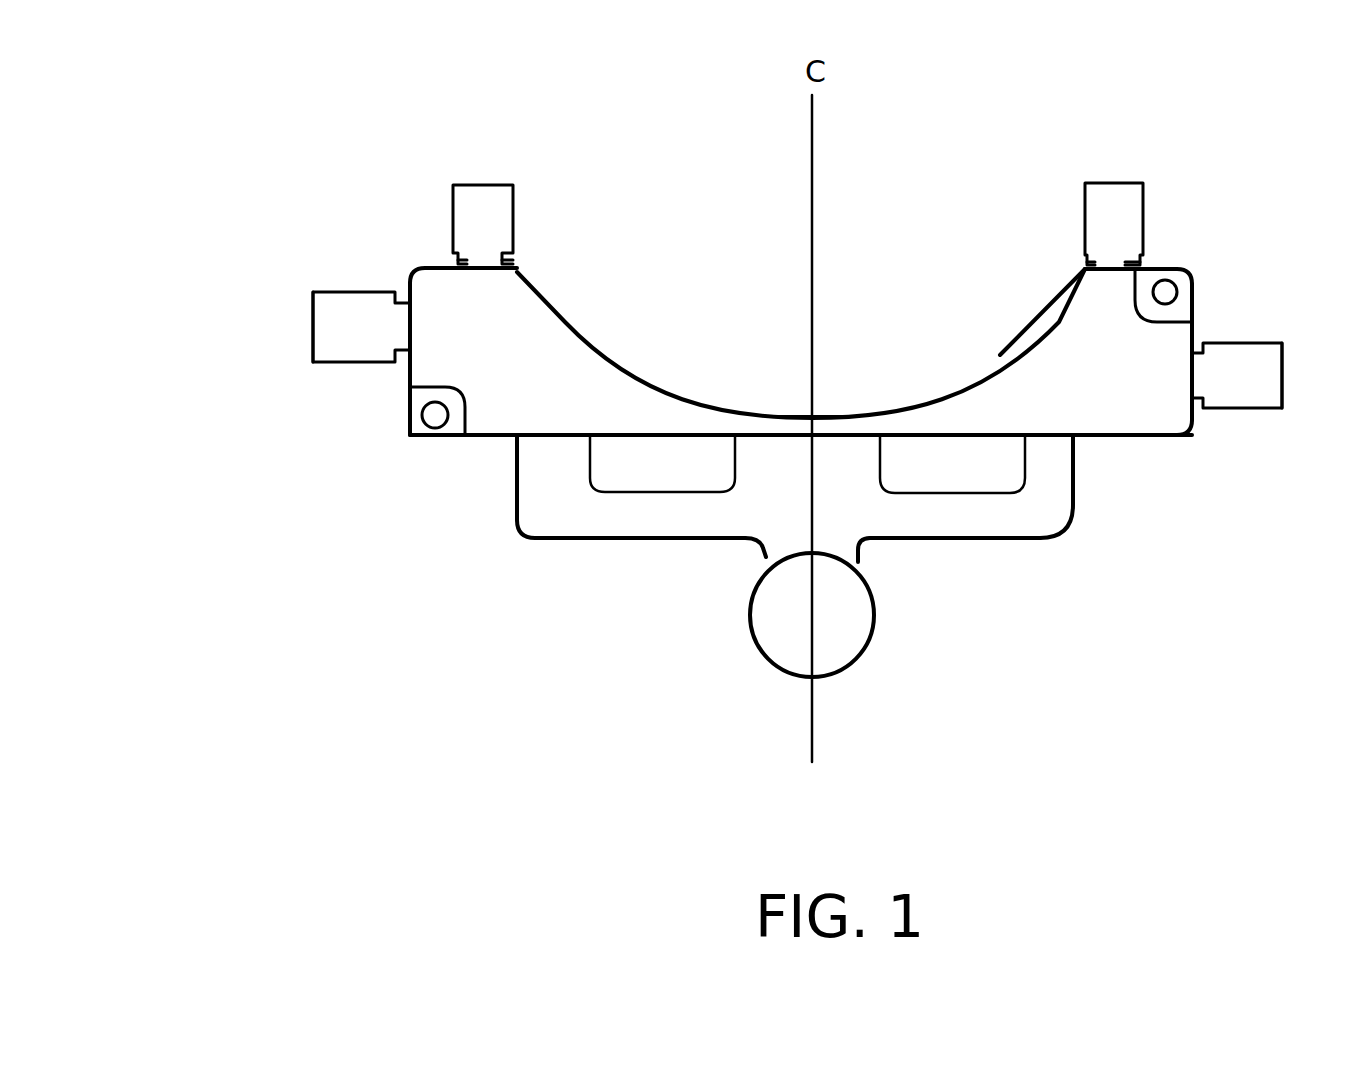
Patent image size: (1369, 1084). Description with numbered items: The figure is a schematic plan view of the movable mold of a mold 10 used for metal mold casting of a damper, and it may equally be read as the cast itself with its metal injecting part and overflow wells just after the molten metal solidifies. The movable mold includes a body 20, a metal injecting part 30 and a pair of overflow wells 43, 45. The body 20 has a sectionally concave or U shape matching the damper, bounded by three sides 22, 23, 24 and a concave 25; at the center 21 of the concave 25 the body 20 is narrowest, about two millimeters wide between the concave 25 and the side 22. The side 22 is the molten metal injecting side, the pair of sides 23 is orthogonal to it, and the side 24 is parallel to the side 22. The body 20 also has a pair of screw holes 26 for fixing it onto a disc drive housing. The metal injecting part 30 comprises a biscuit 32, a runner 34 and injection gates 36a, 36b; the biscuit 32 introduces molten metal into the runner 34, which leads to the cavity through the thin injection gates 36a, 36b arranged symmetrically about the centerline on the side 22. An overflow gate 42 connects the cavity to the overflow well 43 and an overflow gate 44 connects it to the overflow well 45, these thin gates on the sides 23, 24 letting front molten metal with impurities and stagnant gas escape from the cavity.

The mold 10 is at (232, 307).
The body 20 is at (550, 332).
The center 21 is at (800, 393).
The side 22 is at (1148, 437).
The side 23 is at (410, 373).
The side 24 is at (427, 268).
The concave 25 is at (1020, 320).
The screw hole 26 is at (435, 415).
The metal injecting part 30 is at (832, 773).
The biscuit 32 is at (780, 628).
The runner 34 is at (985, 520).
The injection gate 36a is at (540, 470).
The injection gate 36b is at (767, 473).
The overflow gate 42 is at (408, 328).
The overflow well 43 is at (330, 312).
The overflow gate 44 is at (487, 263).
The overflow well 45 is at (488, 195).